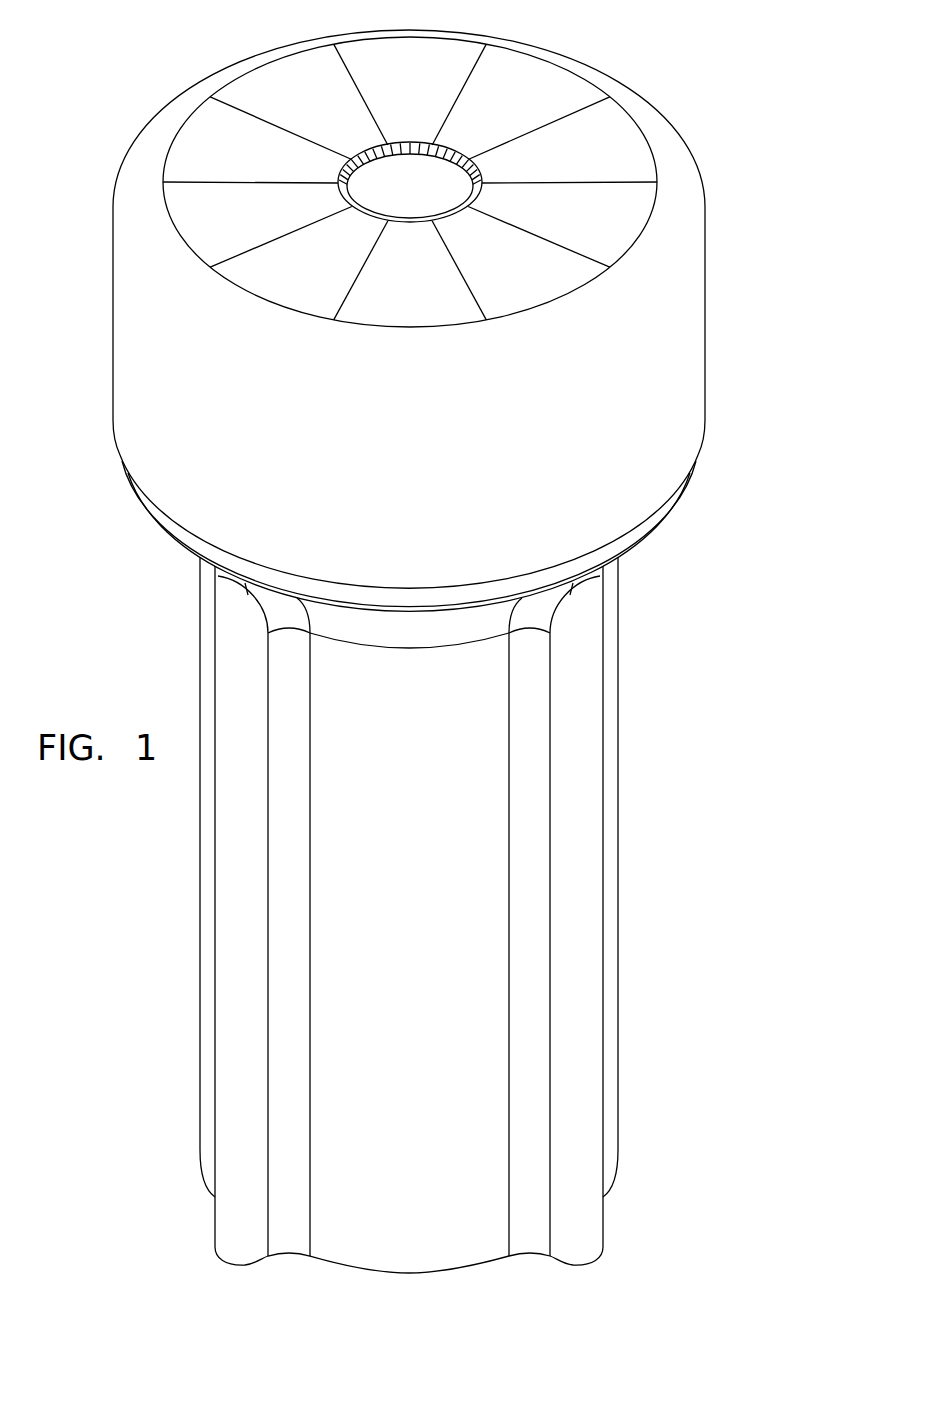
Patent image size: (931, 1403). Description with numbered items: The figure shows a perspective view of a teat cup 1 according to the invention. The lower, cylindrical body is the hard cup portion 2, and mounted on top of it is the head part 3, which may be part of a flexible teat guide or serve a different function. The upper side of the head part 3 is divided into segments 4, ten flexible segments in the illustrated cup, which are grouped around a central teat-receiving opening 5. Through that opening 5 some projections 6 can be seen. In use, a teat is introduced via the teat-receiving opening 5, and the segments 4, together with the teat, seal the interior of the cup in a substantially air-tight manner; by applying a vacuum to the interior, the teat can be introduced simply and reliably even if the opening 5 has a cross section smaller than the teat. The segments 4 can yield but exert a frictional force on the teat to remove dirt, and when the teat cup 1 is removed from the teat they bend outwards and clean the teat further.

The teat cup 1 is at (637, 715).
The hard cup portion 2 is at (571, 1058).
The head part 3 is at (674, 402).
The segments 4 is at (524, 103).
The teat-receiving opening 5 is at (410, 183).
The projections 6 is at (413, 162).